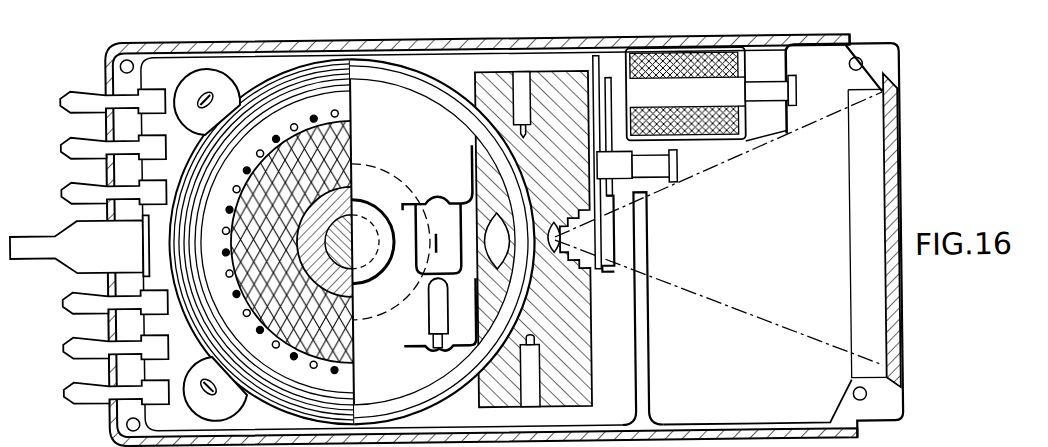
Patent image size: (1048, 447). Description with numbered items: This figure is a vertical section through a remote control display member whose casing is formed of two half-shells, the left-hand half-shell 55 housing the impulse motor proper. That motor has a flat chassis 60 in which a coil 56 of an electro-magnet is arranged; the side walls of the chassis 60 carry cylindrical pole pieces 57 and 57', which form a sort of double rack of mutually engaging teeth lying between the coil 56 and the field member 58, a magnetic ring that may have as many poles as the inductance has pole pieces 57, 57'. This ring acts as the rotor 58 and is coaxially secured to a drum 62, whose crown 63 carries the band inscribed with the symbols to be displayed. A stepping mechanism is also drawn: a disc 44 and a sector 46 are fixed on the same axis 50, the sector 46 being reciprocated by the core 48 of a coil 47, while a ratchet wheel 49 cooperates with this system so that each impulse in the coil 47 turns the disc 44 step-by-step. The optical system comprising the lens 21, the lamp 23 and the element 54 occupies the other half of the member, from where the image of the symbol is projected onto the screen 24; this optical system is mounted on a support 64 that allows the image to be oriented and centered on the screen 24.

The lens 21 is at (557, 241).
The lamp 23 is at (425, 261).
The screen 24 is at (888, 158).
The disc 44 is at (599, 61).
The sector 46 is at (613, 80).
The coil 47 is at (705, 56).
The core 48 is at (725, 93).
The ratchet wheel 49 is at (618, 201).
The axis 50 is at (654, 169).
The optical system element 54 is at (476, 195).
The half-shell 55 is at (780, 26).
The coil 56 is at (319, 70).
The cylindrical pole piece 57 is at (279, 218).
The cylindrical pole piece 57' is at (280, 215).
The field member 58 is at (342, 345).
The flat chassis 60 is at (291, 406).
The drum 62 is at (385, 94).
The crown 63 is at (457, 94).
The support 64 is at (558, 81).